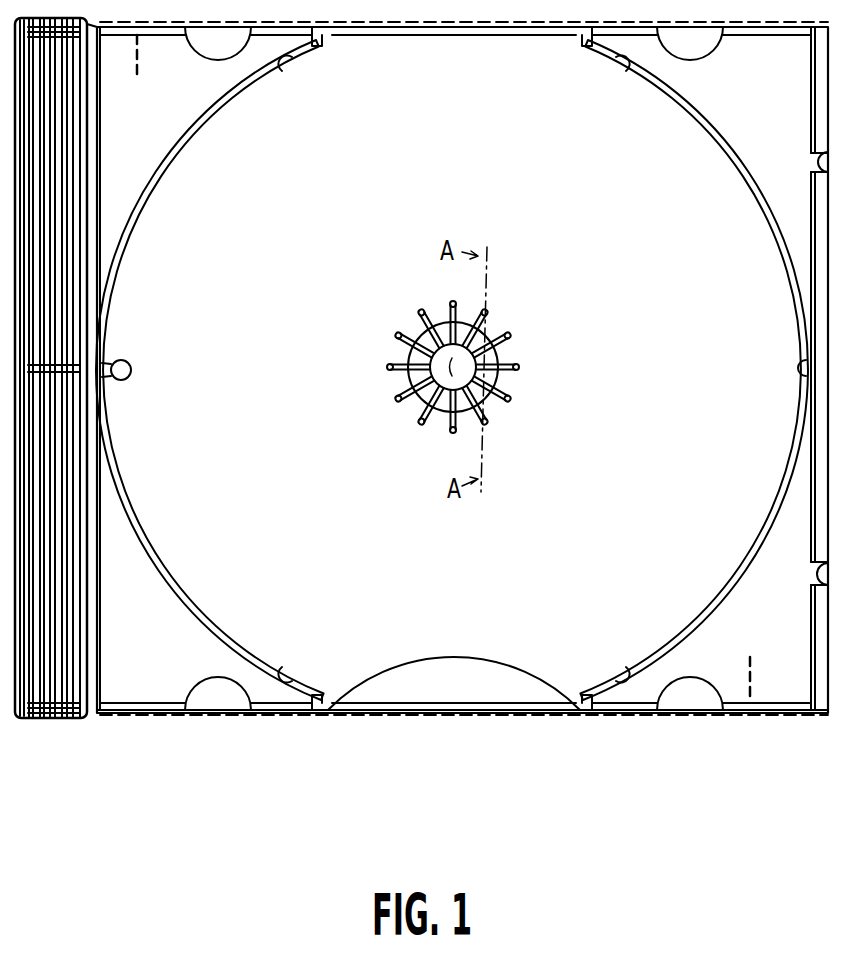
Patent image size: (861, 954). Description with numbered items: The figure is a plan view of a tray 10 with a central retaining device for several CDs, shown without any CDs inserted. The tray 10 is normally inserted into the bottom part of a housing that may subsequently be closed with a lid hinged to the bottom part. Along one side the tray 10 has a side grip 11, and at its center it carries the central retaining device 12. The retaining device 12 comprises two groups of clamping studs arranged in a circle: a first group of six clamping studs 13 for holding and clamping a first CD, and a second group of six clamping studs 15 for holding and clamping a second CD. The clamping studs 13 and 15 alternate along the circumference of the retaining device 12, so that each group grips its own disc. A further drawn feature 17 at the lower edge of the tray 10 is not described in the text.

The tray 10 is at (680, 799).
The side grip 11 is at (37, 678).
The central retaining device 12 is at (365, 461).
The clamping studs 13 is at (472, 312).
The clamping studs 15 is at (440, 312).
The finger access cutout 17 is at (367, 647).